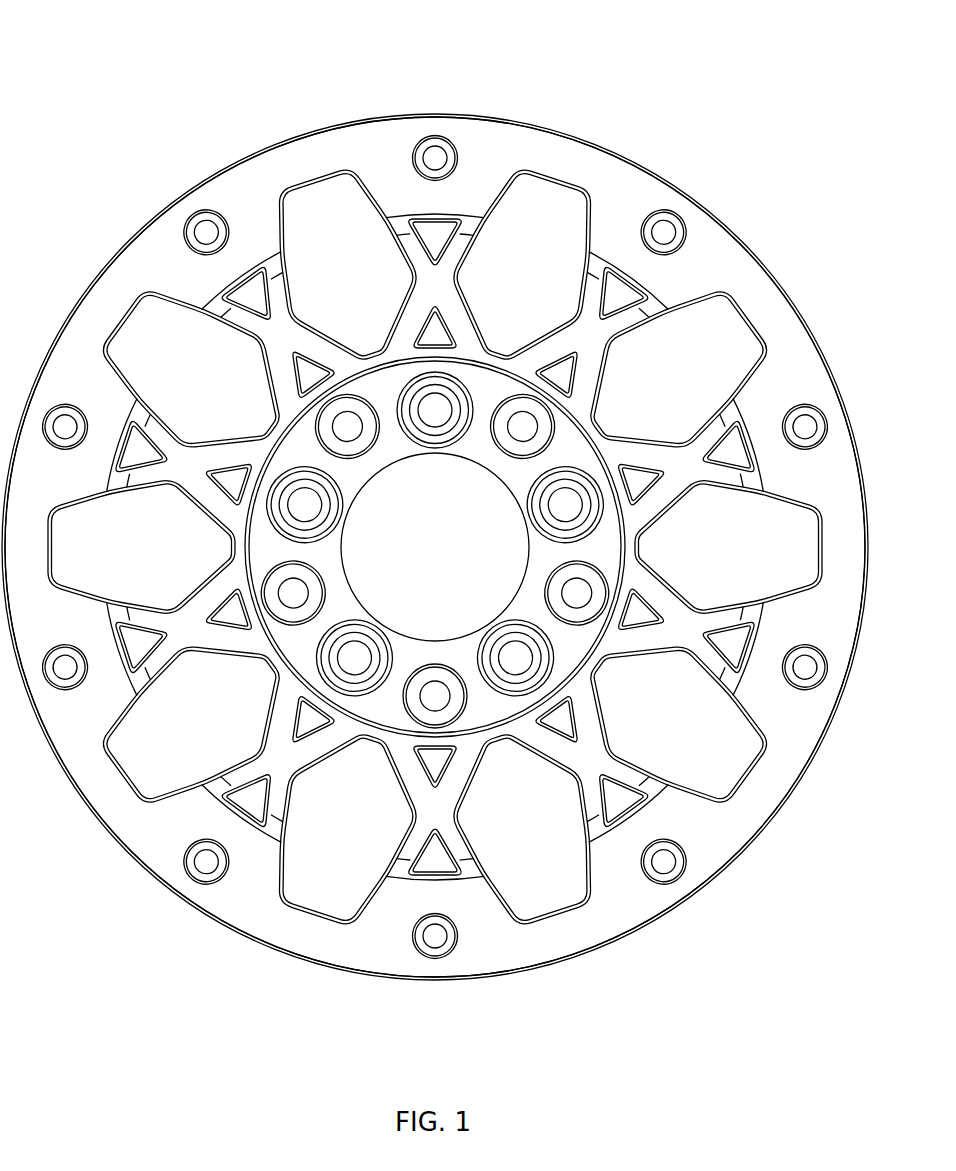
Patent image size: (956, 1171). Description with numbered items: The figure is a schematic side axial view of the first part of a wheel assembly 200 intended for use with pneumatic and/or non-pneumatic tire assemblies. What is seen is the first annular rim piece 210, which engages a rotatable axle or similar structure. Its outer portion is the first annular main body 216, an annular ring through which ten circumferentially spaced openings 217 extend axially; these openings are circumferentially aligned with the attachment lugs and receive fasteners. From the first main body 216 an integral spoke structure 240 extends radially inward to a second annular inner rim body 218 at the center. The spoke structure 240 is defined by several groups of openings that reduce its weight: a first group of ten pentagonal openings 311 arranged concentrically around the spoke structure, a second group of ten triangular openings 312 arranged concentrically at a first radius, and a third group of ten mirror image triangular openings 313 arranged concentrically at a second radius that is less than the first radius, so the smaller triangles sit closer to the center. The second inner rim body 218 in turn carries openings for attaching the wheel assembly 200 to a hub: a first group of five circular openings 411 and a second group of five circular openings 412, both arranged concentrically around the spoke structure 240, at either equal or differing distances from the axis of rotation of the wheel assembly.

The wheel assembly 200 is at (713, 78).
The first annular rim piece 210 is at (735, 146).
The first annular main body 216 is at (246, 197).
The circumferentially spaced openings 217 is at (202, 227).
The second annular inner rim body 218 is at (345, 472).
The integral spoke structure 240 is at (694, 676).
The pentagonal openings 311 is at (710, 348).
The triangular openings 312 is at (615, 303).
The mirror image triangular openings 313 is at (432, 330).
The circular openings 411 is at (555, 503).
The circular openings 412 is at (512, 430).